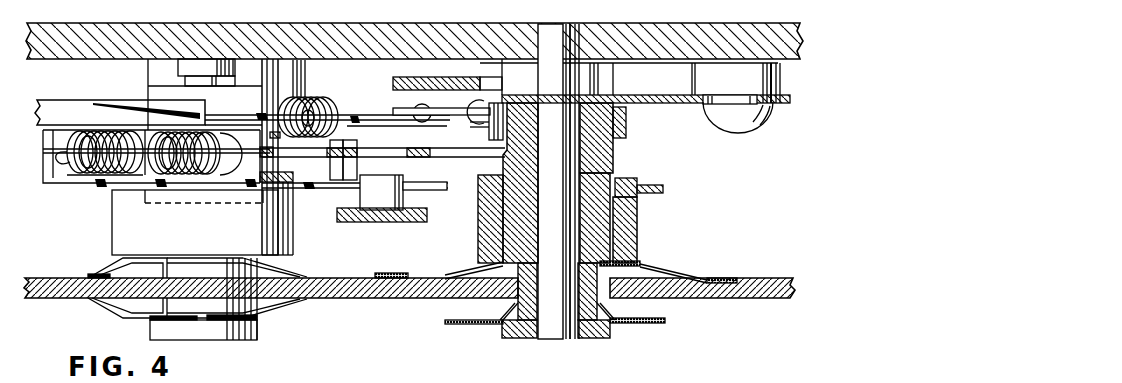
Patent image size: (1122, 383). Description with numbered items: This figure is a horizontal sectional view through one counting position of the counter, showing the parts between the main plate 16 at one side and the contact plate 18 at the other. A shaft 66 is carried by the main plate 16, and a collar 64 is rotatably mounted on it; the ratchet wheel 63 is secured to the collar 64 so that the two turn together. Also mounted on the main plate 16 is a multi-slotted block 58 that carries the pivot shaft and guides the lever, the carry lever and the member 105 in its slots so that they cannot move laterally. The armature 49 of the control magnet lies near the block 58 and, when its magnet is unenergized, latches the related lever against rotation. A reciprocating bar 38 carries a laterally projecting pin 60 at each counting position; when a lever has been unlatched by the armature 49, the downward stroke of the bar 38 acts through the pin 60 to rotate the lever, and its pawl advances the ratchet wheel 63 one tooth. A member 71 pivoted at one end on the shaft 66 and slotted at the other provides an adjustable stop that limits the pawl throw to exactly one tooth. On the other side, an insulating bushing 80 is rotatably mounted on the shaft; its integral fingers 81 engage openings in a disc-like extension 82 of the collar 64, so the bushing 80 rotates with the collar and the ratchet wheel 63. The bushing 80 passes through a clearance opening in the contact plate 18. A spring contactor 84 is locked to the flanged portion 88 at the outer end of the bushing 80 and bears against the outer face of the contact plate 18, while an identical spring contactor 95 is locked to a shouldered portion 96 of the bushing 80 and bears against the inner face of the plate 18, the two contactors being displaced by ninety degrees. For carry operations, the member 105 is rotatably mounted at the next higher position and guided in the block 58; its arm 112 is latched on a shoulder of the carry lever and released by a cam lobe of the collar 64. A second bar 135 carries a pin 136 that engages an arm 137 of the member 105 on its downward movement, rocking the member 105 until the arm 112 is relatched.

The main plate 16 is at (352, 33).
The contact plate 18 is at (386, 299).
The bar 38 is at (395, 82).
The armature 49 is at (87, 107).
The multi-slotted block 58 is at (150, 66).
The pin 60 is at (452, 127).
The ratchet wheel 63 is at (627, 132).
The collar 64 is at (611, 164).
The shaft 66 is at (548, 339).
The member 71 is at (672, 103).
The bushing 80 is at (637, 225).
The fingers 81 is at (620, 178).
The disc like extension 82 is at (663, 189).
The spring contactor 84 is at (653, 329).
The flanged portion 88 is at (506, 338).
The spring contactor 95 is at (688, 275).
The shouldered portion 96 is at (637, 262).
The member 105 is at (110, 187).
The arm 112 is at (333, 175).
The bar 135 is at (378, 223).
The pin 136 is at (404, 207).
The arm 137 is at (412, 185).